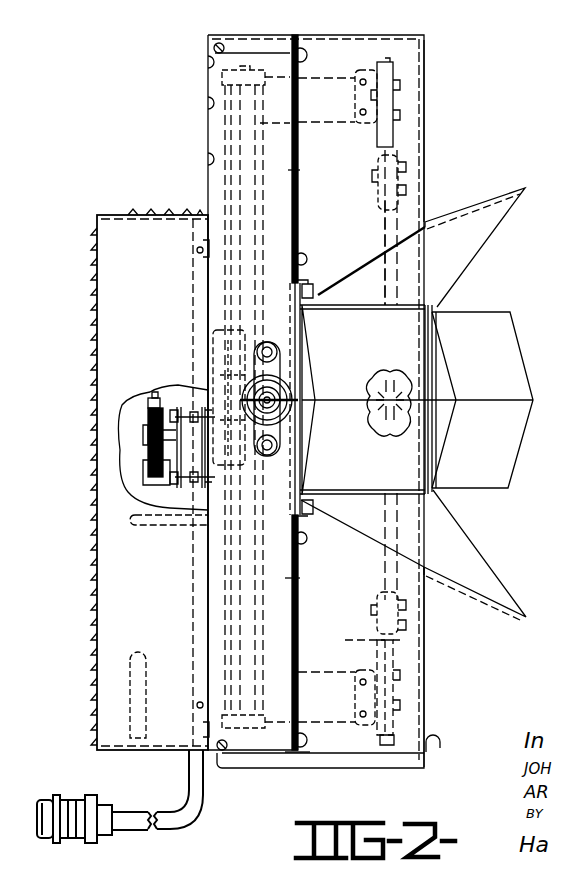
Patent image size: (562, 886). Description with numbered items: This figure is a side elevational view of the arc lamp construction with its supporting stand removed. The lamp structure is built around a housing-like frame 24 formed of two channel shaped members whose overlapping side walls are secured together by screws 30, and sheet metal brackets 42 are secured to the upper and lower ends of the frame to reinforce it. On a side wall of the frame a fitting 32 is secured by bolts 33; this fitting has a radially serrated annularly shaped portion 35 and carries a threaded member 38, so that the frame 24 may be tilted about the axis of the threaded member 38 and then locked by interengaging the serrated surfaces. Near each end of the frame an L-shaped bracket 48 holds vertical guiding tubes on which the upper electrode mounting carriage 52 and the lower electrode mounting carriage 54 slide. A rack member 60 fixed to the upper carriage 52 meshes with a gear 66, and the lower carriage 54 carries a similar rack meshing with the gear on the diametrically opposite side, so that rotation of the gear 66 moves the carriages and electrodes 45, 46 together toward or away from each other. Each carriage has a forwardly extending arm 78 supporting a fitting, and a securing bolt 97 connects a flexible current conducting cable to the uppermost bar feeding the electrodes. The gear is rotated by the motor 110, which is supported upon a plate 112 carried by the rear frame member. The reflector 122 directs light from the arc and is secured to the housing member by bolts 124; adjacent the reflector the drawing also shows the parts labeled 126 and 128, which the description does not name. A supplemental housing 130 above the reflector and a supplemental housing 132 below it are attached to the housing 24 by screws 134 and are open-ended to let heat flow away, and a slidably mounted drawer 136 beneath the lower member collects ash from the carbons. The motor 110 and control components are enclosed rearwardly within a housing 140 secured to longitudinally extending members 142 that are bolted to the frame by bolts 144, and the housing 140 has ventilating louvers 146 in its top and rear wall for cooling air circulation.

The housing-like frame 24 is at (292, 32).
The screws 30 is at (213, 50).
The fitting 32 is at (283, 406).
The bolts 33 is at (275, 350).
The annularly shaped portion 35 is at (285, 382).
The threaded member 38 is at (300, 398).
The sheet metal brackets 42 is at (306, 62).
The electrode 45 is at (398, 268).
The electrode 46 is at (398, 520).
The L-shaped bracket 48 is at (206, 90).
The electrode mounting carriage 52 is at (308, 176).
The electrode mounting carriage 54 is at (292, 580).
The rack member 60 is at (222, 182).
The gear 66 is at (228, 372).
The forwardly extending arm 78 is at (374, 122).
The securing bolt 97 is at (380, 62).
The motor 110 is at (126, 436).
The plate 112 is at (178, 400).
The reflector 122 is at (478, 200).
The bolts 124 is at (308, 282).
The lamp housing flange 126 is at (438, 318).
The lamp housing 128 is at (508, 326).
The supplemental housing 130 is at (425, 120).
The supplemental housing 132 is at (425, 659).
The screws 134 is at (300, 58).
The receptacle or drawer 136 is at (428, 760).
The housing 140 is at (97, 264).
The longitudinally extending members 142 is at (192, 580).
The bolts 144 is at (202, 238).
The ventilating louvers 146 is at (90, 236).